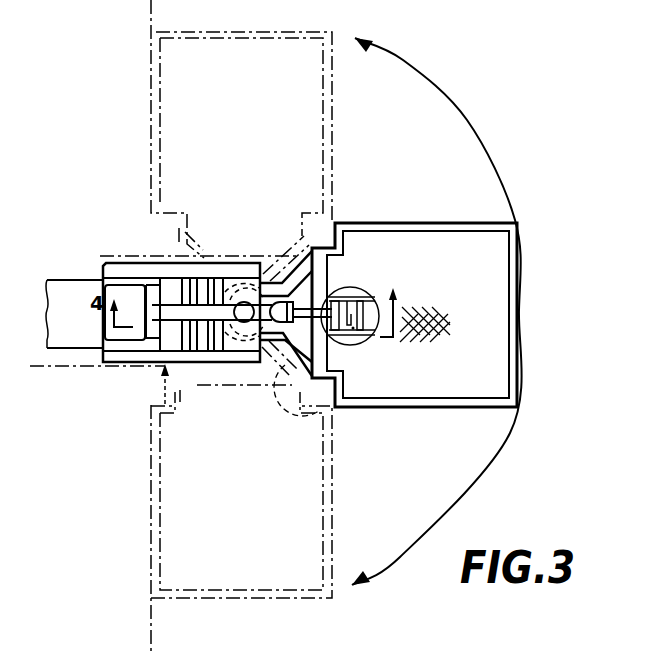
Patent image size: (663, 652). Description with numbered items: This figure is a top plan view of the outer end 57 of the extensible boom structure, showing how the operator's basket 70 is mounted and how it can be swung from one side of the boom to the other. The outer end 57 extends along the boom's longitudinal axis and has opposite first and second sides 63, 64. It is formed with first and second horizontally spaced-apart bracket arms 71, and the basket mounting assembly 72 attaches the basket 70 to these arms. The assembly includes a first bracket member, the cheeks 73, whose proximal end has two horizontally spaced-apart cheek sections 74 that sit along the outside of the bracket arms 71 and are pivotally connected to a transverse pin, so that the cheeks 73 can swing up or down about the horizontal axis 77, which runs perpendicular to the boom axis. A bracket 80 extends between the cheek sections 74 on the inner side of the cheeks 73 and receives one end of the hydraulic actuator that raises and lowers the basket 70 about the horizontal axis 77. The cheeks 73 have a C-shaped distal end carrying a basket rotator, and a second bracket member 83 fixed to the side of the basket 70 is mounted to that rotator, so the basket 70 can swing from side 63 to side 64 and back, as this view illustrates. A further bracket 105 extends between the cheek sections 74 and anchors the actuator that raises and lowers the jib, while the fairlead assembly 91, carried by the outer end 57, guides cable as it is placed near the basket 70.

The outer end 57 is at (70, 348).
The first side 63 is at (80, 278).
The second side 64 is at (85, 348).
The basket 70 is at (517, 283).
The bracket arms 71 is at (123, 278).
The basket mounting assembly 72 is at (245, 250).
The cheeks 73 is at (222, 333).
The cheek sections 74 is at (167, 272).
The horizontal axis 77 is at (147, 10).
The bracket 80 is at (192, 283).
The second bracket member 83 is at (303, 372).
The fairlead assembly 91 is at (355, 290).
The bracket 105 is at (258, 336).